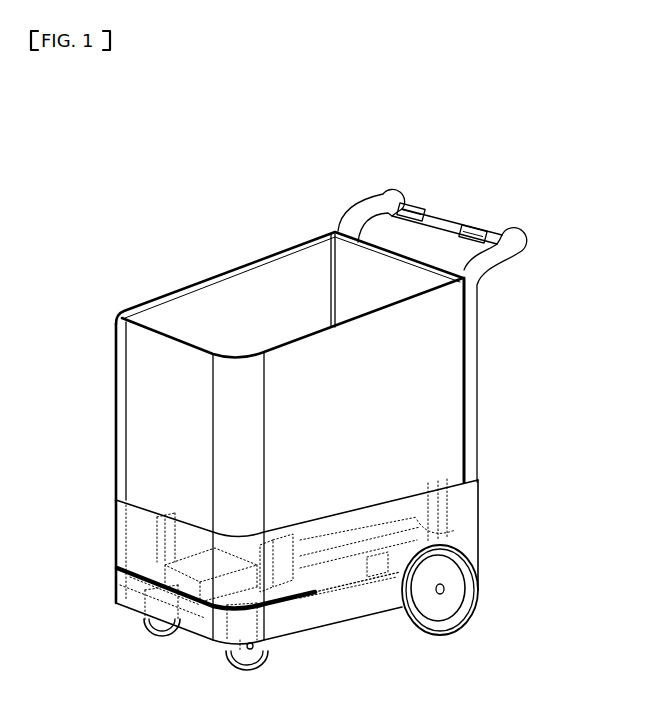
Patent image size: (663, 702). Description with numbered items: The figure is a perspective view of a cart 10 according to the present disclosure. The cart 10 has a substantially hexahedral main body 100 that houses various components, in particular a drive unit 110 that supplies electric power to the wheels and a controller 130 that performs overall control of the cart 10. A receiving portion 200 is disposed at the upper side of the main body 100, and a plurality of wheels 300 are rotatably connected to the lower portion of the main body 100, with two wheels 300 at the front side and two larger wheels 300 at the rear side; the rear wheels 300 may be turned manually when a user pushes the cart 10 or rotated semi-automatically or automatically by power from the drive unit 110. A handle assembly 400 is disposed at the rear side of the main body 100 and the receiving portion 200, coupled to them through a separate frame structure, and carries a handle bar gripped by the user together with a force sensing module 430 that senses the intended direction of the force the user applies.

The cart 10 is at (513, 101).
The main body 100 is at (130, 523).
The drive unit 110 is at (395, 533).
The controller 130 is at (126, 556).
The receiving portion 200 is at (447, 388).
The wheels 300 is at (476, 616).
The handle assembly 400 is at (460, 212).
The force sensing module 430 is at (414, 206).